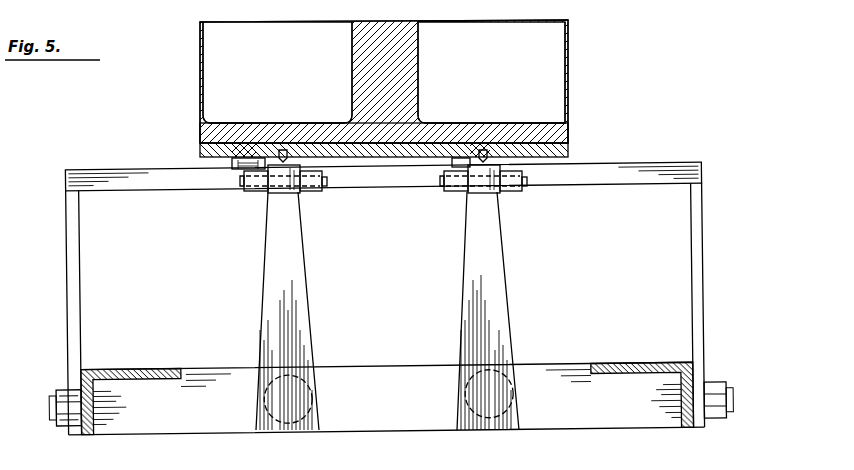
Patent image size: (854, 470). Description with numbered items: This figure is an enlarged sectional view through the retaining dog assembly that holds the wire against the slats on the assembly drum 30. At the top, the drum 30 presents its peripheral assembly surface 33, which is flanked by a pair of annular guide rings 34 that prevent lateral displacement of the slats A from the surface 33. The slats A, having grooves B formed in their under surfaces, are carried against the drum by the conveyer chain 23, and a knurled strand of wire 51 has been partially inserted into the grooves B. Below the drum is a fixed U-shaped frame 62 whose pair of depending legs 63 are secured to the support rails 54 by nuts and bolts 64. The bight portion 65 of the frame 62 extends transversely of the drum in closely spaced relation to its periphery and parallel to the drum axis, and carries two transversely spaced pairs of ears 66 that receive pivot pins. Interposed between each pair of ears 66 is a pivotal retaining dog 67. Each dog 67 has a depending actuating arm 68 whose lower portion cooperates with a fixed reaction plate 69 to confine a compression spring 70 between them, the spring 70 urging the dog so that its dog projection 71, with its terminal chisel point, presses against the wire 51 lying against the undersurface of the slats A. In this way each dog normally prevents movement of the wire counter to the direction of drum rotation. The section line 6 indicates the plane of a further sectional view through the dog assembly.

The assembly drum 30 is at (421, 66).
The peripheral surface 33 is at (331, 138).
The annular guide rings 34 is at (200, 150).
The section line 6- 6 is at (515, 118).
The bight portion 65 is at (383, 188).
The depending legs 63 is at (80, 272).
The U-shaped frame 62 is at (65, 298).
The reaction plate 69 is at (360, 366).
The support rails 54 is at (144, 366).
The nuts and bolts 64 is at (98, 406).
The compression spring 70 is at (311, 398).
The actuating arm 68 is at (263, 292).
The ears 66 is at (259, 192).
The dog projection 71 is at (283, 194).
The retaining dog 67 is at (327, 181).
The conveyer chain 23 is at (236, 169).
The wire strand 51 is at (282, 150).
The grooves B is at (284, 150).
The slats A is at (417, 150).